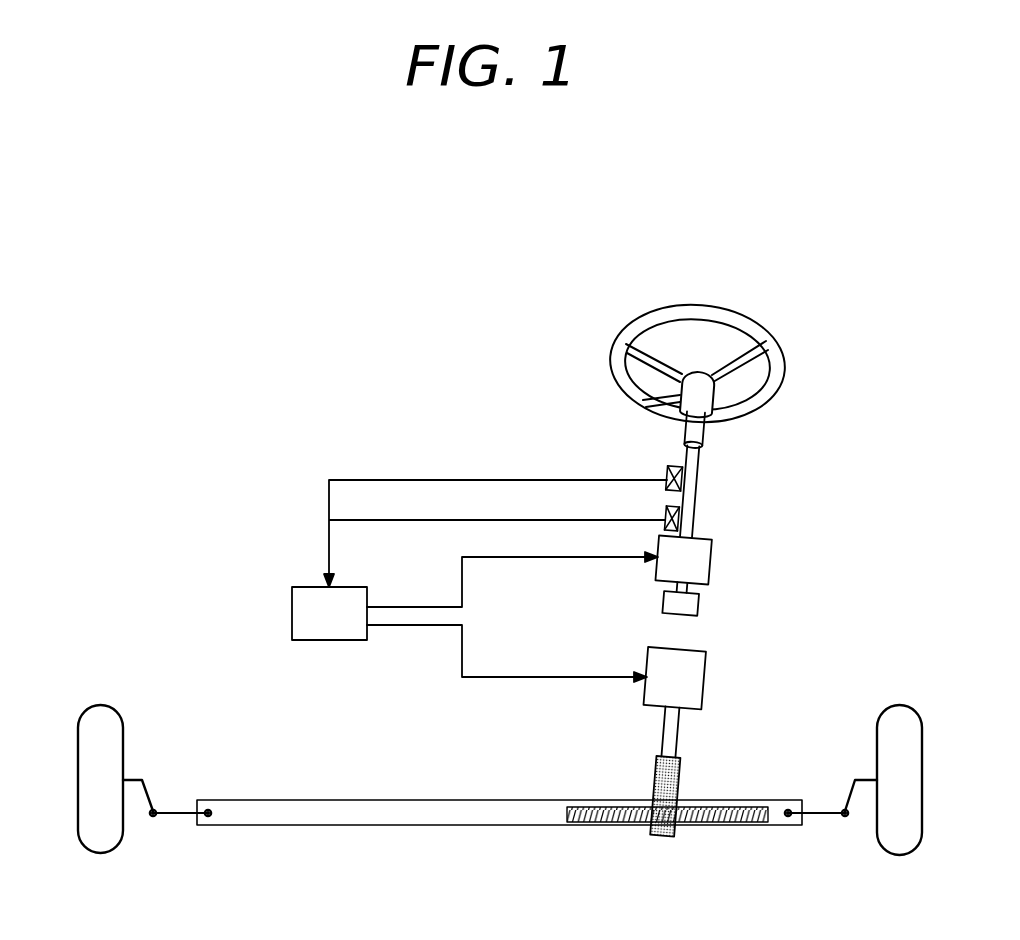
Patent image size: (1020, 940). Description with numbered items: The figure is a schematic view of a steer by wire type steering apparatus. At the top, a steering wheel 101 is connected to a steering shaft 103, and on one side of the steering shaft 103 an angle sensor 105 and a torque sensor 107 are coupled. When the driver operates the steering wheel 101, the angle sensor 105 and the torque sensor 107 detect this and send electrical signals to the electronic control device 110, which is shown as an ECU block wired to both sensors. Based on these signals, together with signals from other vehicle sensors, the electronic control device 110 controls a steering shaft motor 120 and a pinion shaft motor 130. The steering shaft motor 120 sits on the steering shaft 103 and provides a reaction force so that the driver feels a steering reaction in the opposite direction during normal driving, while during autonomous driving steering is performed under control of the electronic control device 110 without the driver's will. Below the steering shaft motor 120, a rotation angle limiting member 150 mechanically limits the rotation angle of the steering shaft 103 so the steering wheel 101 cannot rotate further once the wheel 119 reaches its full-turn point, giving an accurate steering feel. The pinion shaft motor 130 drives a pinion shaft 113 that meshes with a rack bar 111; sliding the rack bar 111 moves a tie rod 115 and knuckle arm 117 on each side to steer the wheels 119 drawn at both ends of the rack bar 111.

The steering wheel 101 is at (775, 368).
The steering shaft 103 is at (693, 495).
The angle sensor 105 is at (667, 472).
The torque sensor 107 is at (665, 515).
The electronic control device 110 is at (292, 615).
The rack bar 111 is at (413, 825).
The pinion shaft 113 is at (673, 775).
The tie rod 115 is at (168, 816).
The knuckle arm 117 is at (148, 797).
The wheel 119 is at (120, 735).
The steering shaft motor 120 is at (704, 563).
The pinion shaft motor 130 is at (697, 665).
The rotation angle limiting member 150 is at (692, 605).